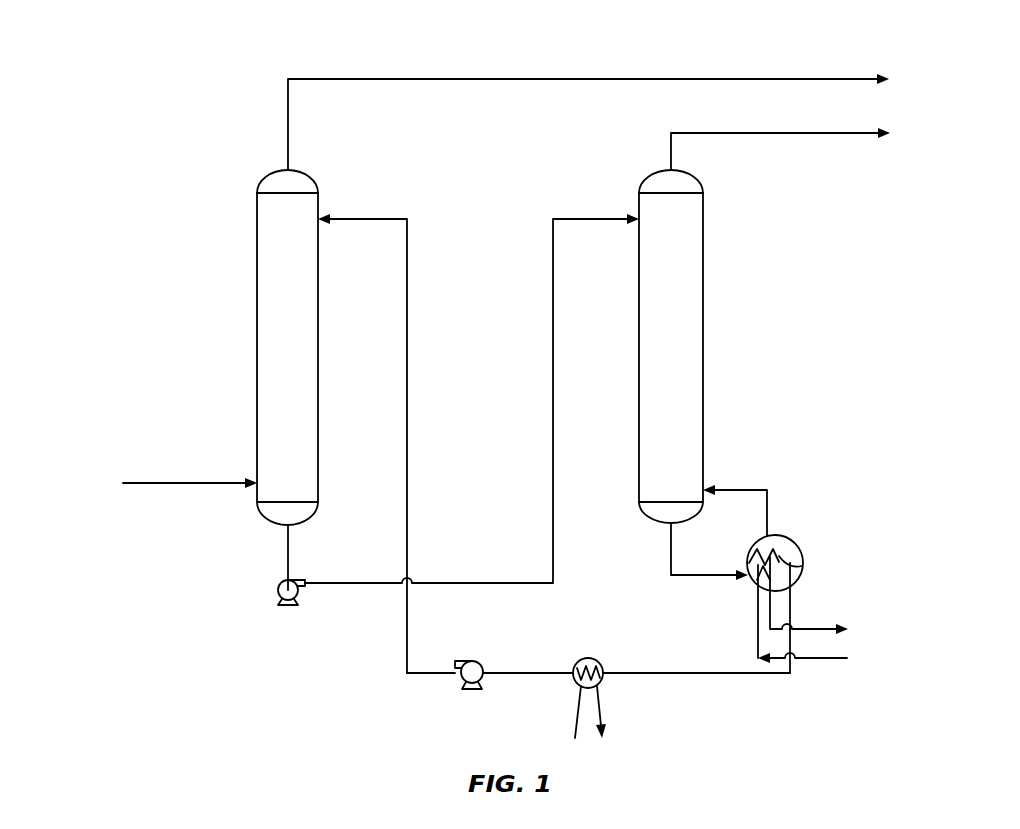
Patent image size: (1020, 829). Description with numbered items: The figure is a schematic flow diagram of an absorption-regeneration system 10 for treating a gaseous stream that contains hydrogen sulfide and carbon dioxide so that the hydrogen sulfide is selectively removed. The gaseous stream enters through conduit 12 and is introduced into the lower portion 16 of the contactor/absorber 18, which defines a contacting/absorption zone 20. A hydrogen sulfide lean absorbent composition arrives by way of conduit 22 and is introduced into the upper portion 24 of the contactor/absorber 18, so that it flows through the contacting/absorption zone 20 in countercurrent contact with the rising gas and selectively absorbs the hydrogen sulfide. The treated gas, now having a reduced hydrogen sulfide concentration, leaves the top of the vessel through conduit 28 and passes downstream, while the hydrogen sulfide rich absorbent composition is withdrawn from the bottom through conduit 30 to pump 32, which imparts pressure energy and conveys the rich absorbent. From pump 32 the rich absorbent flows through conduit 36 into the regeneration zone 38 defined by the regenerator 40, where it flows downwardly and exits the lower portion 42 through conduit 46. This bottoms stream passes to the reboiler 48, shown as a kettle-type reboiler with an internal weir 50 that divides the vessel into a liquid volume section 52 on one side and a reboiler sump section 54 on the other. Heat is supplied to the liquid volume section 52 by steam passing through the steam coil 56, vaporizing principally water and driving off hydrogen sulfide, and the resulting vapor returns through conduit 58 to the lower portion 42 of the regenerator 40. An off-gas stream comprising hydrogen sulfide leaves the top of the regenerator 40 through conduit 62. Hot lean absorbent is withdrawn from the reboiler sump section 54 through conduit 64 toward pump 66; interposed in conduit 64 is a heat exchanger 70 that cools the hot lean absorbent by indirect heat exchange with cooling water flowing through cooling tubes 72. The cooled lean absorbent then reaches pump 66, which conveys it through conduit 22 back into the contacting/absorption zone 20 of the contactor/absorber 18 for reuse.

The absorption-regeneration system 10 is at (180, 48).
The conduit 12 is at (152, 483).
The lower portion 16 is at (257, 462).
The contactor/absorber 18 is at (245, 204).
The contacting/absorption zone 20 is at (303, 361).
The conduit 22 is at (407, 395).
The upper portion 24 is at (257, 248).
The conduit 28 is at (306, 79).
The conduit 30 is at (288, 558).
The pump 32 is at (278, 590).
The conduit 36 is at (553, 470).
The regeneration zone 38 is at (686, 361).
The regenerator 40 is at (625, 204).
The lower portion 42 is at (639, 468).
The conduit 46 is at (671, 552).
The reboiler 48 is at (786, 540).
The internal weir 50 is at (798, 562).
The liquid volume section 52 is at (750, 556).
The reboiler sump section 54 is at (792, 585).
The steam coil 56 is at (827, 658).
The conduit 58 is at (752, 490).
The conduit 62 is at (752, 133).
The conduit 64 is at (693, 673).
The pump 66 is at (472, 660).
The heat exchanger 70 is at (590, 658).
The cooling tubes 72 is at (576, 702).